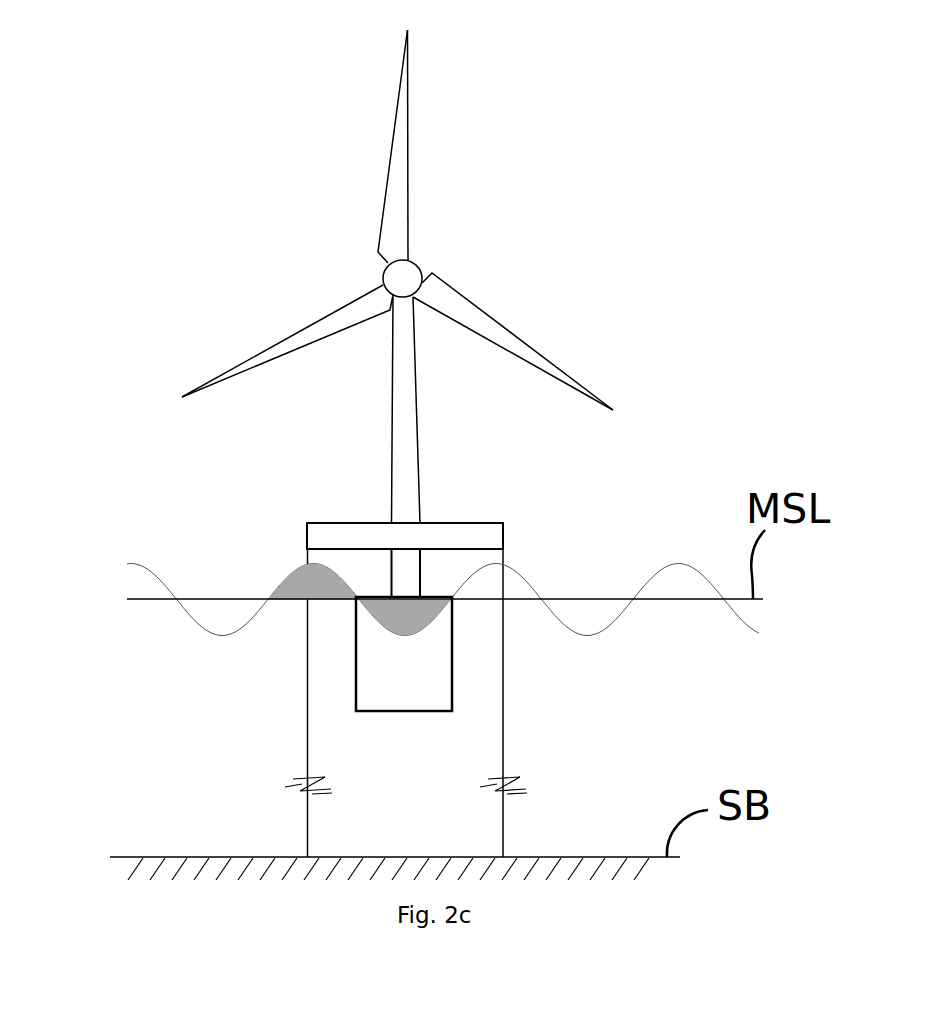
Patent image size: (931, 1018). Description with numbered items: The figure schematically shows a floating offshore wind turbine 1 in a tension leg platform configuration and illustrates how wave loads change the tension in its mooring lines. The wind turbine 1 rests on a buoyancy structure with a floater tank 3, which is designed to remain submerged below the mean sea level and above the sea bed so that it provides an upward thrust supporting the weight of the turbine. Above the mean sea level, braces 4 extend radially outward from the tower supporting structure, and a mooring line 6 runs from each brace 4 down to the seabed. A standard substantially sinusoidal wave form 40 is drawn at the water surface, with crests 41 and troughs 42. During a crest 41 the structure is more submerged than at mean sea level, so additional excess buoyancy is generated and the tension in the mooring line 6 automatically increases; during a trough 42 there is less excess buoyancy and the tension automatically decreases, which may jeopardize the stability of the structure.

The wind turbine 1 is at (470, 245).
The floater tank 3 is at (375, 703).
The brace 4 is at (487, 540).
The mooring line 6 is at (503, 713).
The wave form 40 is at (145, 567).
The crest 41 is at (294, 586).
The trough 42 is at (409, 617).